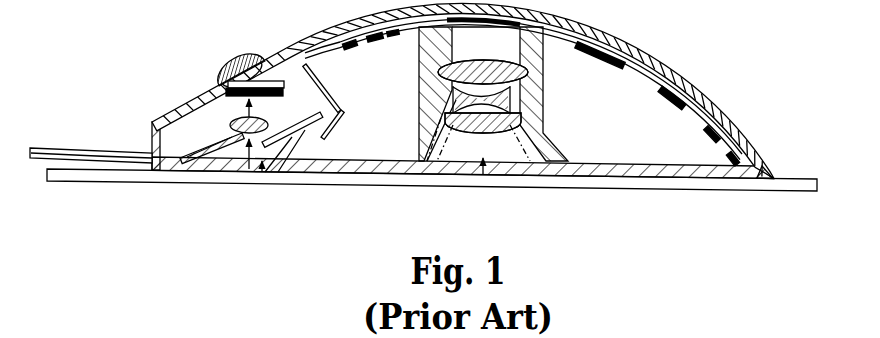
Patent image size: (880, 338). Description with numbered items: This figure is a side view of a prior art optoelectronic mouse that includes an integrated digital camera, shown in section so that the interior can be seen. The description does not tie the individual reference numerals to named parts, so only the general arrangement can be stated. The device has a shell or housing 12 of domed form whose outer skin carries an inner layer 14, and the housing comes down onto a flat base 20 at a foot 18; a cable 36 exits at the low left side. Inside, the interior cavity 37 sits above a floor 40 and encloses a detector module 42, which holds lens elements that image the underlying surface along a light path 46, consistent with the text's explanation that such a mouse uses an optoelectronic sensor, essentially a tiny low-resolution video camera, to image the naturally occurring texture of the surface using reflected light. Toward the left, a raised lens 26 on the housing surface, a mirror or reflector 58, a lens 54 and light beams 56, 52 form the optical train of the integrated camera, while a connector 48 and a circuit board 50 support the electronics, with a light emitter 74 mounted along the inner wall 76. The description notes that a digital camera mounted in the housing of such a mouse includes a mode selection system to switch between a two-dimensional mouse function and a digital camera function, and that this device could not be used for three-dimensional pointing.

The housing 12 is at (750, 90).
The inner liner layer 14 is at (680, 68).
The housing foot 18 is at (808, 152).
The base plate 20 is at (732, 191).
The lens 26 is at (246, 32).
The cable 36 is at (93, 150).
The cavity 37 is at (613, 121).
The floor 40 is at (182, 173).
The detector module 42 is at (411, 64).
The light path 46 is at (483, 175).
The connector 48 is at (319, 101).
The circuit board 50 is at (328, 130).
The light beam 52 is at (262, 172).
The lens 54 is at (235, 124).
The light beam 56 is at (254, 108).
The mirror 58 is at (240, 96).
The light emitter 74 is at (357, 64).
The inner wall 76 is at (328, 50).